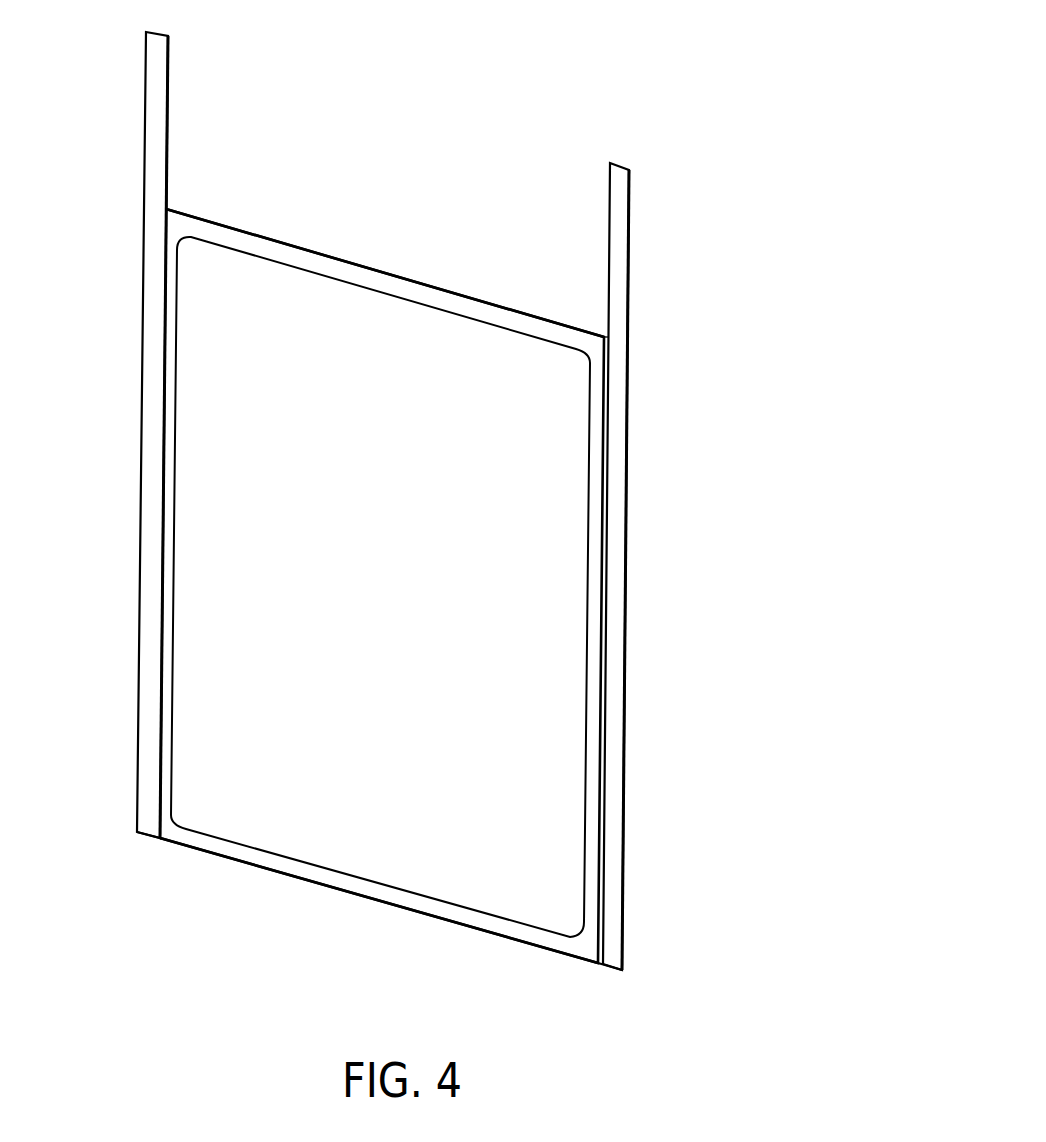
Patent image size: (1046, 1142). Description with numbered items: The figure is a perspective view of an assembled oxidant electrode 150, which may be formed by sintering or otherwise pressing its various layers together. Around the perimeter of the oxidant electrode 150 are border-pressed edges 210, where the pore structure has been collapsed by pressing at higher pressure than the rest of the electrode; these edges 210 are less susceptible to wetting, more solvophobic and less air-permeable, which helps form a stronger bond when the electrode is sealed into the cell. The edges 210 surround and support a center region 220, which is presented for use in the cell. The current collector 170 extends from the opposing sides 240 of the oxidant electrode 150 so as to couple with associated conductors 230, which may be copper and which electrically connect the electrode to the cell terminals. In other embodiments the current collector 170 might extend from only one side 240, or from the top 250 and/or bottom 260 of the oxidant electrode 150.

The oxidant electrode 150 is at (645, 82).
The current collector 170 is at (176, 203).
The edges 210 is at (521, 322).
The center region 220 is at (392, 539).
The conductors 230 is at (152, 251).
The opposing sides 240 is at (162, 853).
The top 250 is at (382, 259).
The bottom 260 is at (321, 899).